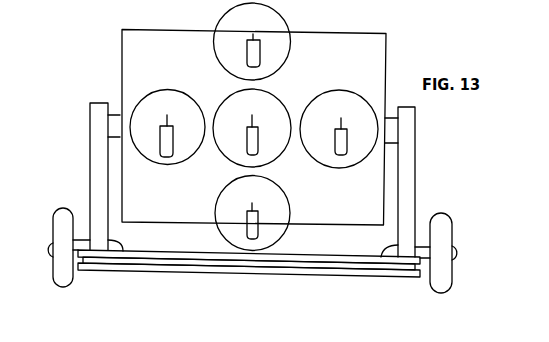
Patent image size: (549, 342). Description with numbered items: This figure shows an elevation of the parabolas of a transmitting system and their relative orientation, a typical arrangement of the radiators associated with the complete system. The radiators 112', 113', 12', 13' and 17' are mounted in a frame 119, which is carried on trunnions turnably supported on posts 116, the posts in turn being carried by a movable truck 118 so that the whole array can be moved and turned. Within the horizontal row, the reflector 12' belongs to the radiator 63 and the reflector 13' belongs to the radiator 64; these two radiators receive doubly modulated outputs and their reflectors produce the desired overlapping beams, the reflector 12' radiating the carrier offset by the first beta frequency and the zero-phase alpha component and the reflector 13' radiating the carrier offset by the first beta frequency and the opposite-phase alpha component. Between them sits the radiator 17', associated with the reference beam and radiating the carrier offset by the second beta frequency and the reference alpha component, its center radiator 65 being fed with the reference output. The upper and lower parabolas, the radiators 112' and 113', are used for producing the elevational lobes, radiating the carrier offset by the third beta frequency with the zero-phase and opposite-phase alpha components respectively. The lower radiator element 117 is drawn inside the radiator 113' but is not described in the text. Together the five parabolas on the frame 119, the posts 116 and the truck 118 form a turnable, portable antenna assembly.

The frame 119 is at (386, 37).
The posts 116 is at (90, 112).
The radiator 112' is at (271, 41).
The reflector 12' is at (167, 117).
The radiator 17' is at (255, 122).
The reflector 13' is at (339, 121).
The radiator 113' is at (269, 213).
The radiator 63 is at (160, 148).
The radiator 65 is at (247, 147).
The radiator 64 is at (347, 153).
The bottom tube 117 is at (247, 218).
The movable truck 118 is at (337, 275).